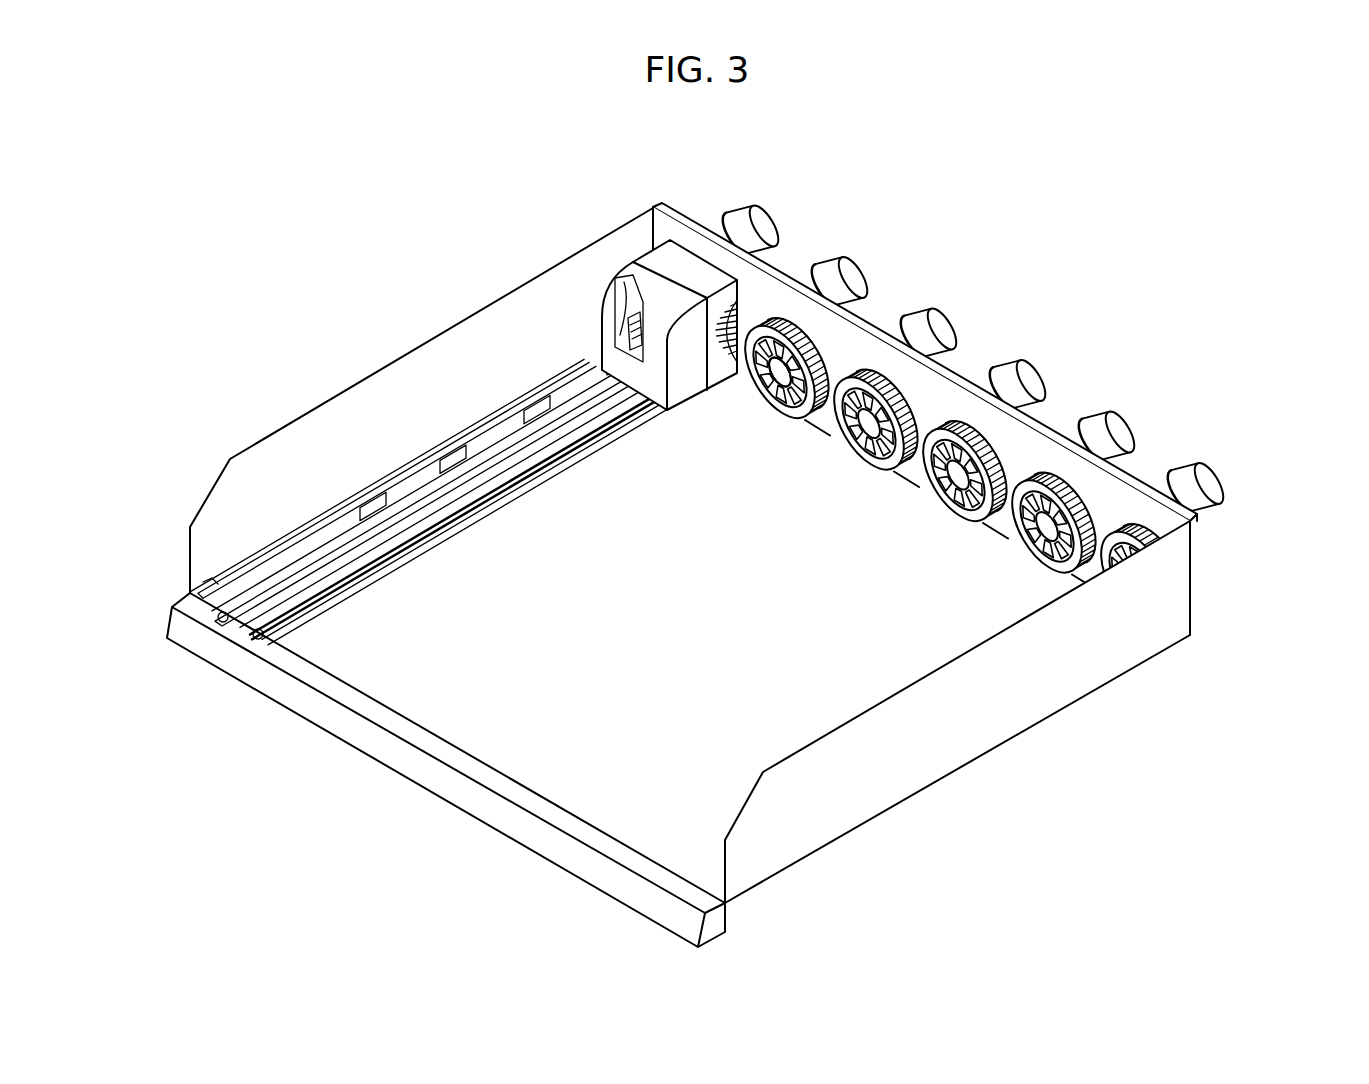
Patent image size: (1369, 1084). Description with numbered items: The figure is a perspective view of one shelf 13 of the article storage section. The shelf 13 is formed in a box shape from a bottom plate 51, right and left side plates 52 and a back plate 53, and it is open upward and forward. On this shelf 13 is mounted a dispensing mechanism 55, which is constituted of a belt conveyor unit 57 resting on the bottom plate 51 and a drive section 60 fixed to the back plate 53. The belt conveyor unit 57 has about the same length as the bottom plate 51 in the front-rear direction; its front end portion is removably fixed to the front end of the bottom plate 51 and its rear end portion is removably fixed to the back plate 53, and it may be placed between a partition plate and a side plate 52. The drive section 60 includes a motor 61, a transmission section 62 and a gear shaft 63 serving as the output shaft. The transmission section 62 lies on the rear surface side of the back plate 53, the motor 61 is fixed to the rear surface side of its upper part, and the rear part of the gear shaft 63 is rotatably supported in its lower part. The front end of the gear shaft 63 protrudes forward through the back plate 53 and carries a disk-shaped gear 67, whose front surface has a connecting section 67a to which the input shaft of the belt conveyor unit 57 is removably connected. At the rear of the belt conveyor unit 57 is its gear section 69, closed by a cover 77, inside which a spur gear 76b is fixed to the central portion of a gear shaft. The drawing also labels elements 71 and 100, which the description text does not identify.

The shelf 13 is at (943, 371).
The bottom plate 51 is at (497, 715).
The side plate 52 is at (247, 447).
The back plate 53 is at (1128, 477).
The dispensing mechanism 55 is at (483, 437).
The belt conveyor unit 57 is at (390, 487).
The drive section 60 is at (1011, 312).
The motor 61 is at (762, 215).
The transmission section 62 is at (747, 246).
The gear shaft 63 is at (750, 338).
The gear 67 is at (828, 347).
The connecting section 67a is at (800, 345).
The gear section 69 is at (605, 283).
The hinge 71 is at (210, 612).
The spur gear 76b is at (633, 330).
The cover 77 is at (615, 293).
The medium 100 is at (214, 582).